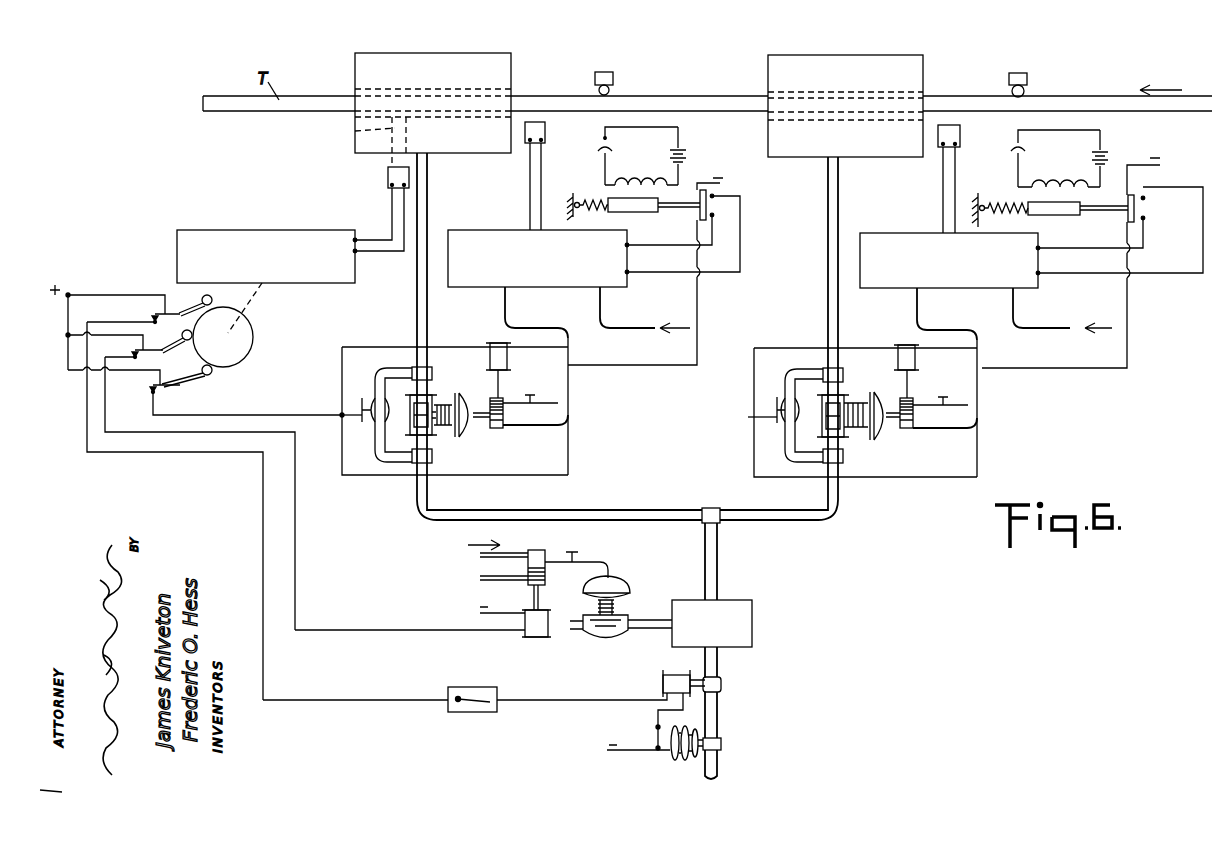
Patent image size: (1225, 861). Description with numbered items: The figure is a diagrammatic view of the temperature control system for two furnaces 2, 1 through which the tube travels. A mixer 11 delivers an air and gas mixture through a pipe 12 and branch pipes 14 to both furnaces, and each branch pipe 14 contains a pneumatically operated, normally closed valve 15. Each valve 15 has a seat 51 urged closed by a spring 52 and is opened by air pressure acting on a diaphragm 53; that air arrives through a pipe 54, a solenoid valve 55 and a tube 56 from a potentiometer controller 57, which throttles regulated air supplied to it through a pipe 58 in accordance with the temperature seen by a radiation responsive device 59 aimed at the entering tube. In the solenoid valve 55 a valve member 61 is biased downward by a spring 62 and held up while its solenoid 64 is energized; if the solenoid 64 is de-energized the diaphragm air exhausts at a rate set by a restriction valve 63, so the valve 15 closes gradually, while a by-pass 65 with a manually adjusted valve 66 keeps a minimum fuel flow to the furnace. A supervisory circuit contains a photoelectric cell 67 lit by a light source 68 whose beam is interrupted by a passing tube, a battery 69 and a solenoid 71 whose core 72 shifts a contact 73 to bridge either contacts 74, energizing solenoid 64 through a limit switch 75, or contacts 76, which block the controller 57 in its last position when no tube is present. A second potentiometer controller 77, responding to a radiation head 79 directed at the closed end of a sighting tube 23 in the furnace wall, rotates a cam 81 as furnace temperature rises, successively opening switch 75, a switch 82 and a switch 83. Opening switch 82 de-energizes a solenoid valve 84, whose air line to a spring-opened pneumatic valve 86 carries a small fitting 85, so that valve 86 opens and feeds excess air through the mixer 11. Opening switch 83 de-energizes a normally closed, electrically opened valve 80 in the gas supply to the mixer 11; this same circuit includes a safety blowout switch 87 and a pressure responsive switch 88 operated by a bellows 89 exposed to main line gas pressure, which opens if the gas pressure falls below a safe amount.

The furnace 1 is at (854, 61).
The furnace 2 is at (431, 56).
The mixing machine 11 is at (752, 616).
The pipe 12 is at (705, 573).
The branch pipes 14 is at (770, 523).
The air control valve 15 is at (472, 406).
The sighting tube 23 is at (356, 133).
The seat 51 is at (412, 426).
The spring 52 is at (446, 405).
The diaphragm 53 is at (459, 430).
The pipe 54 is at (485, 420).
The solenoid valve 55 is at (498, 430).
The tube 56 is at (572, 400).
The potentiometer type control instrument 57 is at (478, 238).
The pipe 58 is at (641, 330).
The radiation responsive device 59 is at (546, 134).
The valve member 61 is at (505, 420).
The spring 62 is at (504, 400).
The restriction valve 63 is at (737, 389).
The solenoid 64 is at (508, 362).
The by-pass 65 is at (376, 390).
The manually adjusted valve 66 is at (341, 412).
The photo electric cell 67 is at (600, 151).
The light source 68 is at (614, 79).
The battery 69 is at (687, 150).
The solenoid 71 is at (636, 180).
The core 72 is at (651, 213).
The contact 73 is at (715, 207).
The contacts 74 is at (700, 213).
The limit switch 75 is at (158, 393).
The contacts 76 is at (715, 218).
The second potentiometer controller 77 is at (268, 232).
The radiation head 79 is at (388, 174).
The valve 80 is at (678, 675).
The cam 81 is at (253, 338).
The limit switch 82 is at (180, 462).
The limit switch 83 is at (152, 315).
The solenoid valve 84 is at (537, 550).
The bleed valve 85 is at (576, 552).
The pneumatic valve 86 is at (613, 577).
The switch 87 is at (475, 690).
The pressure responsive switch 88 is at (655, 740).
The bellows 89 is at (686, 760).